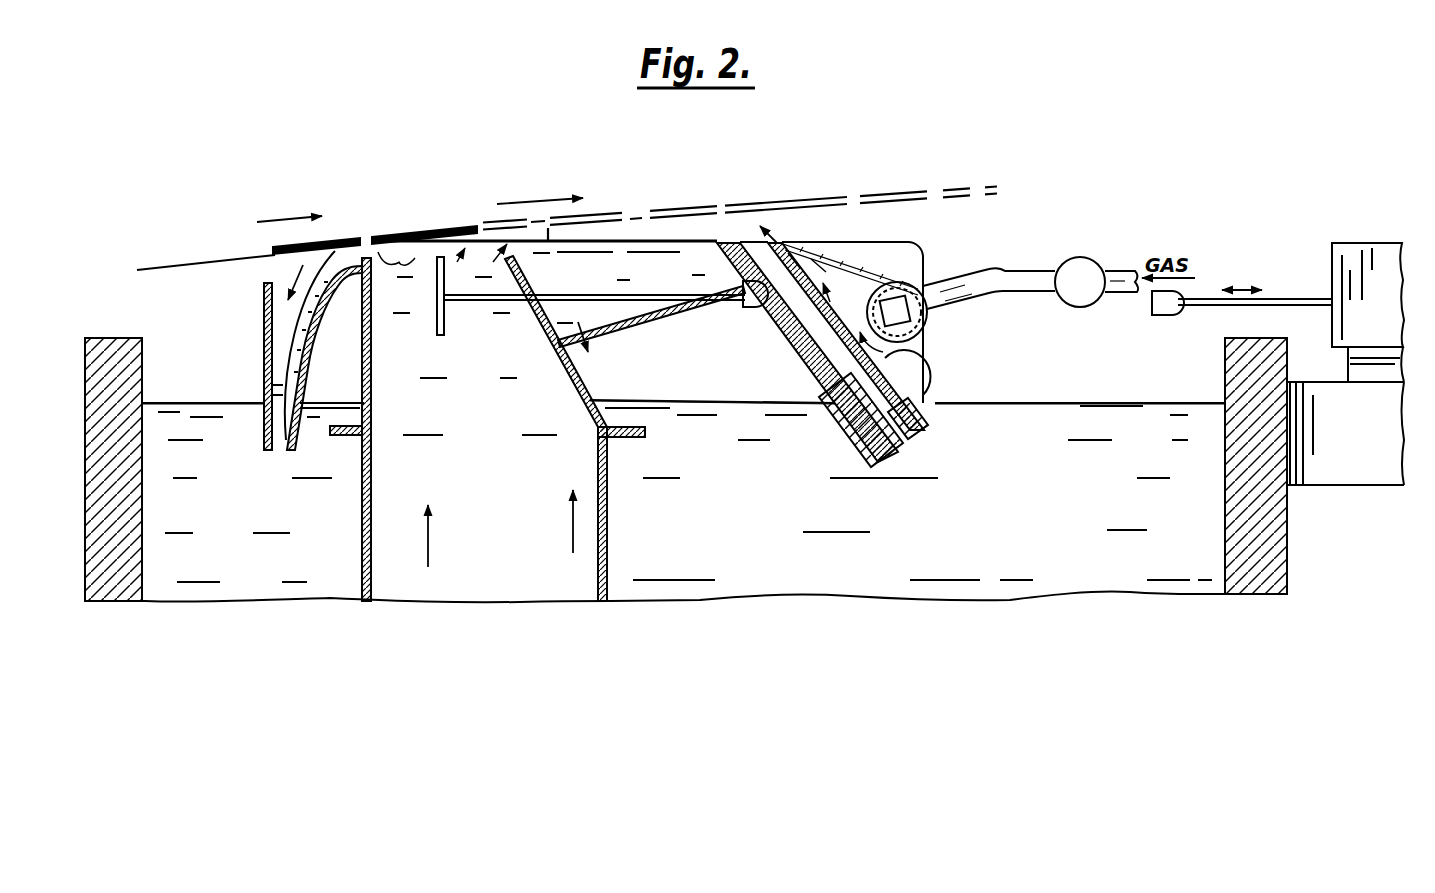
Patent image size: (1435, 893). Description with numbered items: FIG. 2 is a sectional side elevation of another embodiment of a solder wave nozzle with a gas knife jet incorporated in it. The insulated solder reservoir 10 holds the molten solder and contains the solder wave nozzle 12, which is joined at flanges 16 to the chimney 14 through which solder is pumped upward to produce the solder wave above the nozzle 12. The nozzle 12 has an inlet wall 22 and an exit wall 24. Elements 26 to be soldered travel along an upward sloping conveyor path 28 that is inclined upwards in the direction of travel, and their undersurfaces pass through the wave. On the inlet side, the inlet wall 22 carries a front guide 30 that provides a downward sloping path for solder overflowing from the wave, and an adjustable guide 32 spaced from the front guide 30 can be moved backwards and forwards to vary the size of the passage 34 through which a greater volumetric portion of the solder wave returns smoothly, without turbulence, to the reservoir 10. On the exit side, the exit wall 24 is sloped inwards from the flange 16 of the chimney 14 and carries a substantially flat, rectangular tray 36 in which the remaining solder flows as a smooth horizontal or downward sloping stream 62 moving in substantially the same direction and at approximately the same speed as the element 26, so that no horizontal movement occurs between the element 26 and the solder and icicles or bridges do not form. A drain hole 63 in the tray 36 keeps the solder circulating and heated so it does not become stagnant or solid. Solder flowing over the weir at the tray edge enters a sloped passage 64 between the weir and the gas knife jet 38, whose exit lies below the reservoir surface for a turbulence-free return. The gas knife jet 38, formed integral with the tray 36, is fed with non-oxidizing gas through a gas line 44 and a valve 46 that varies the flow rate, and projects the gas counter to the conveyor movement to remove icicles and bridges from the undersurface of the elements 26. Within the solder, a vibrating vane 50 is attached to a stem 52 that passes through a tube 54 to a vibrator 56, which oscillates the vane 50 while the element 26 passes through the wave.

The solder reservoir 10 is at (1288, 546).
The solder wave nozzle 12 is at (367, 257).
The chimney 14 is at (362, 498).
The flanges 16 is at (636, 439).
The inlet wall 22 is at (362, 372).
The exit wall 24 is at (592, 400).
The elements to be soldered 26 is at (429, 234).
The conveyor path 28 is at (205, 265).
The front guide 30 is at (322, 332).
The adjustable guide 32 is at (264, 338).
The passage 34 is at (276, 388).
The tray 36 is at (649, 317).
The gas knife jet 38 is at (840, 273).
The gas line 44 is at (1038, 270).
The valve 46 is at (1088, 268).
The vibrating vane 50 is at (445, 318).
The stem 52 is at (1297, 299).
The tube 54 is at (758, 306).
The vibrator 56 is at (1363, 245).
The solder stream 62 is at (640, 240).
The drain hole 63 is at (578, 325).
The passage 64 is at (788, 243).